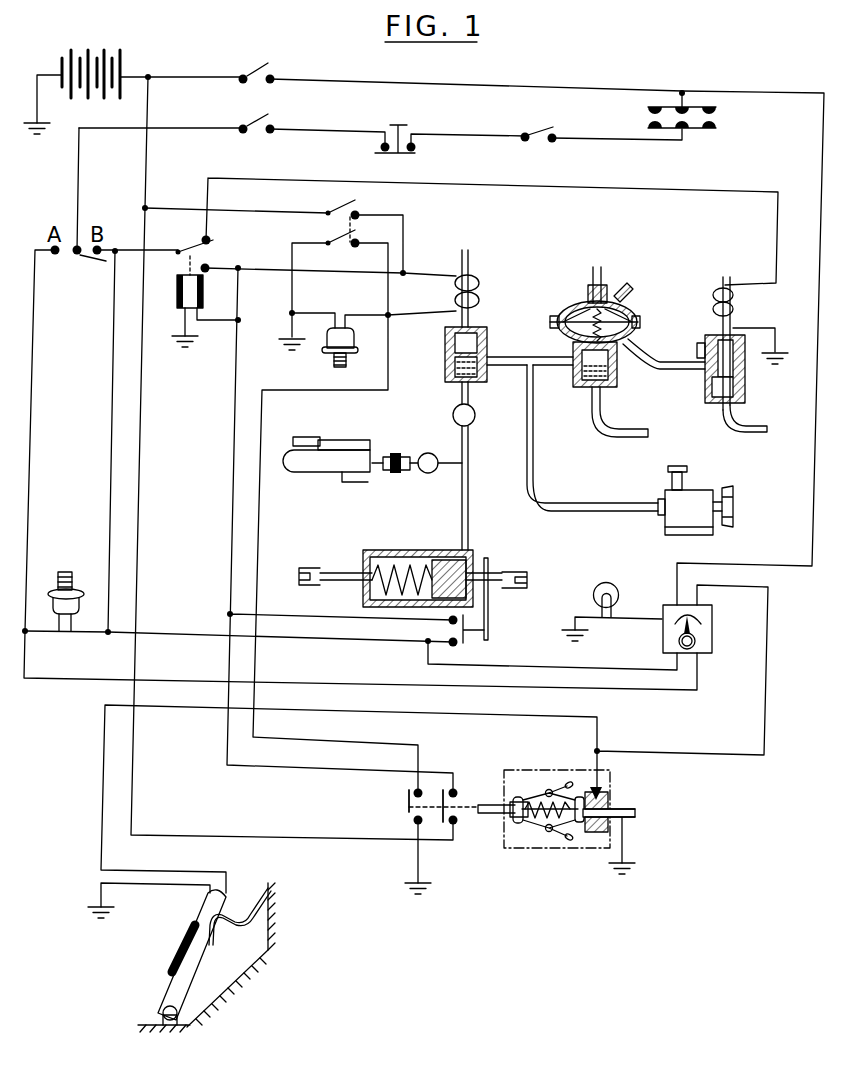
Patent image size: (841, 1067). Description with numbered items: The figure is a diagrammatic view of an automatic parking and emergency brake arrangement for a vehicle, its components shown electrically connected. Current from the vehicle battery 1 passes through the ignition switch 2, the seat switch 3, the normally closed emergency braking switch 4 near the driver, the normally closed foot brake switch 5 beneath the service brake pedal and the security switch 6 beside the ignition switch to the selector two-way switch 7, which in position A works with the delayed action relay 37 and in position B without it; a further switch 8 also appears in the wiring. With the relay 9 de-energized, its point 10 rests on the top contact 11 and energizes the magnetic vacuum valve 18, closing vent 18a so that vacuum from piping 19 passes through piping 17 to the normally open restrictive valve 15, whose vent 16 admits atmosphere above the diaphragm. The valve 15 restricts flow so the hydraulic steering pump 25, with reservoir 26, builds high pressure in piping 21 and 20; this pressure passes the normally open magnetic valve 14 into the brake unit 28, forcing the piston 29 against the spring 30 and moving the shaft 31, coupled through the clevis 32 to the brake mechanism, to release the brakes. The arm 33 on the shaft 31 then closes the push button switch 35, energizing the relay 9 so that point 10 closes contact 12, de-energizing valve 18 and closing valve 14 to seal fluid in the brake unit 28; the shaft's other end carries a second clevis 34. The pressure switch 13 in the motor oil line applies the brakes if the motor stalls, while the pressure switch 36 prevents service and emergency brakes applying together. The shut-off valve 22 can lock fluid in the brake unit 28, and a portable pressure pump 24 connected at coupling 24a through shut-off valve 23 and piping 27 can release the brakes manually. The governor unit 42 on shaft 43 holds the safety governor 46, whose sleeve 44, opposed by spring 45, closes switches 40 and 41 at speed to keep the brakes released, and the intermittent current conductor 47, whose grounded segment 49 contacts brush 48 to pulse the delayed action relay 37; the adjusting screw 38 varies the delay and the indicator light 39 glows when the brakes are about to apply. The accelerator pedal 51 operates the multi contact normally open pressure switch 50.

The vehicle battery 1 is at (89, 53).
The ignition switch 2 is at (247, 68).
The seat switch 3 is at (703, 131).
The emergency braking switch 4 is at (526, 129).
The foot brake switch 5 is at (390, 122).
The security switch 6 is at (245, 119).
The selector two-way switch 7 is at (88, 258).
The double contact switch 8 is at (337, 205).
The relay 9 is at (178, 292).
The terminal of relay 10 is at (177, 251).
The top contact 11 is at (214, 239).
The contact 12 is at (209, 274).
The pressure switch 13 is at (348, 360).
The magnetic valve 14 is at (487, 327).
The restrictive valve 15 is at (577, 298).
The vent 16 is at (626, 294).
The piping 17 is at (678, 371).
The solenoid valve 18 is at (747, 368).
The vent 18a is at (693, 350).
The piping 19 is at (753, 436).
The piping 20 is at (602, 413).
The high pressure line 21 is at (536, 447).
The shut-off valve 22 is at (476, 422).
The shut-off valve 23 is at (426, 453).
The portable pressure pump 24 is at (303, 473).
The coupling 24a is at (394, 455).
The hydraulic steering pump 25 is at (697, 488).
The reservoir 26 is at (668, 477).
The piping 27 is at (468, 517).
The brake unit cylinder 28 is at (363, 550).
The piston 29 is at (433, 560).
The spring 30 is at (398, 565).
The shaft 31 is at (340, 571).
The clevis 32 is at (303, 567).
The arm 33 is at (490, 558).
The fork 34 is at (512, 592).
The push button switch 35 is at (468, 638).
The pressure switch 36 is at (65, 572).
The delayed action relay 37 is at (713, 622).
The adjusting screw 38 is at (697, 644).
The indicator light 39 is at (605, 582).
The switch 40 is at (440, 790).
The switch 41 is at (408, 812).
The governor housing 42 is at (553, 770).
The shaft 43 is at (487, 814).
The sleeve 44 is at (519, 824).
The spring 45 is at (541, 824).
The safety governor 46 is at (552, 832).
The intermittent current conductor 47 is at (610, 823).
The brush 48 is at (604, 778).
The segment 49 is at (612, 801).
The multi contact pressure switch 50 is at (178, 950).
The accelerator pedal 51 is at (165, 993).